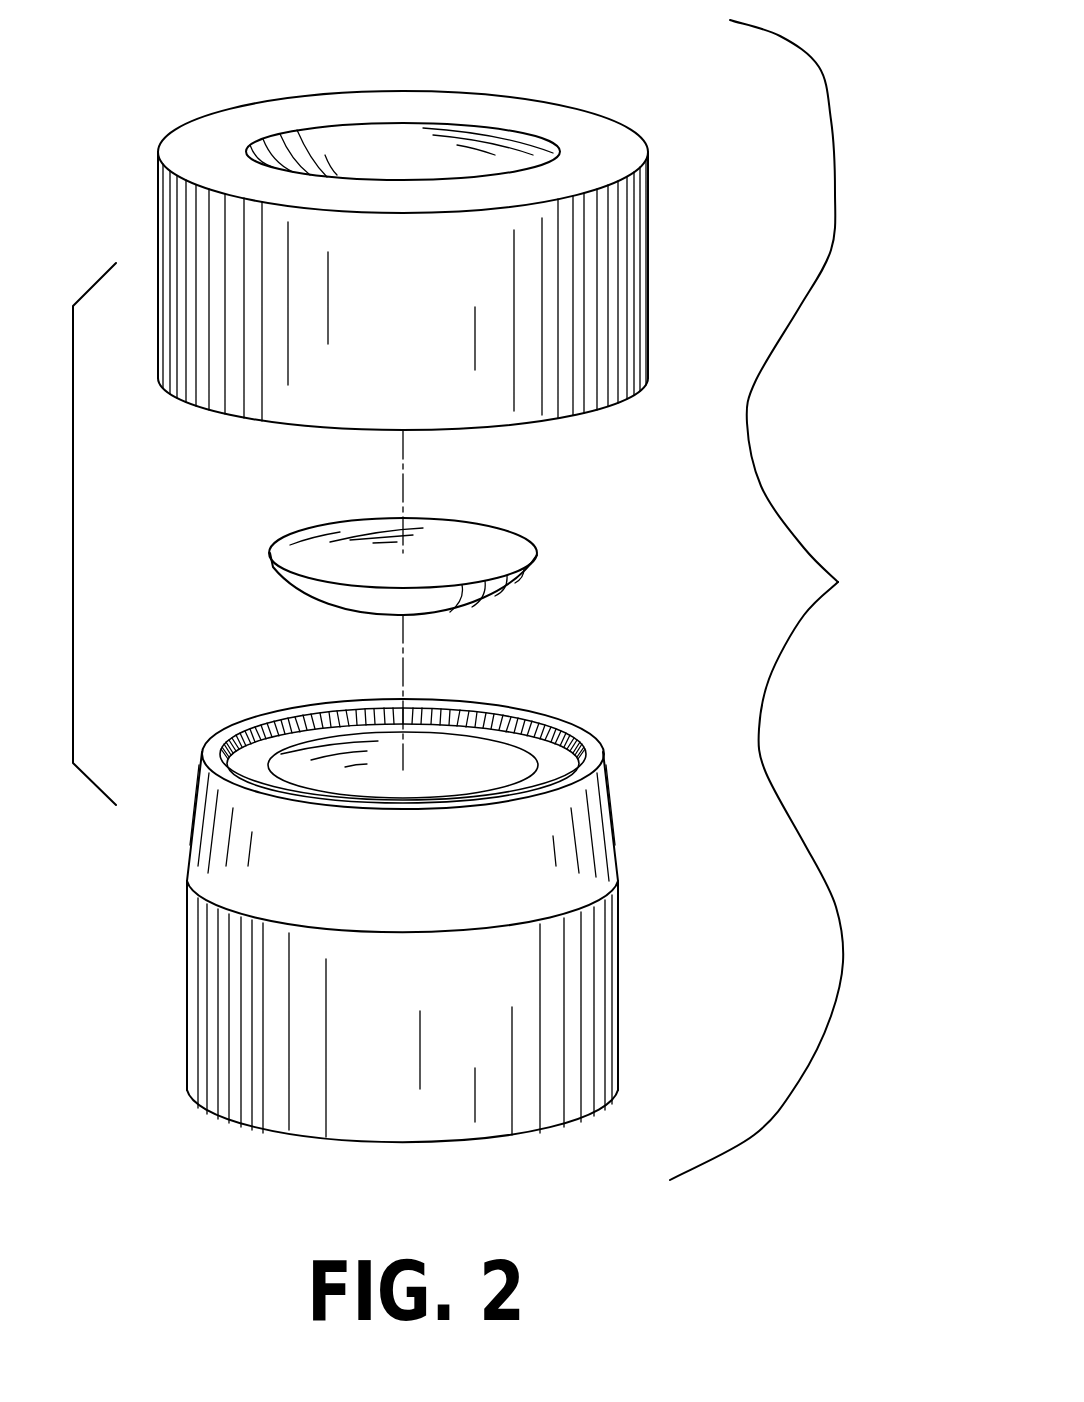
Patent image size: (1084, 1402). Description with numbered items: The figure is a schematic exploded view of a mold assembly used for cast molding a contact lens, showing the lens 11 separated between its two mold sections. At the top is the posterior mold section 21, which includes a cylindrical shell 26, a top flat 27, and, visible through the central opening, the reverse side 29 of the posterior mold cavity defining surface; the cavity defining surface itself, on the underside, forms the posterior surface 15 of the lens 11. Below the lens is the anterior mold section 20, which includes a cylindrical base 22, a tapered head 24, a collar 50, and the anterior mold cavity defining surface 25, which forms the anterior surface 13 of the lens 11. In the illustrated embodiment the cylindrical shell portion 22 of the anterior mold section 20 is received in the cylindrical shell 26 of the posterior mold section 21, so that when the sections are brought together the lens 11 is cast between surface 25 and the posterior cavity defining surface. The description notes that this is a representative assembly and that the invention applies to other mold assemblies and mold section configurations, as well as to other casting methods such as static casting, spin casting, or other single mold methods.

The lens 11 is at (445, 556).
The anterior surface 13 is at (397, 615).
The posterior surface 15 is at (353, 553).
The anterior mold section 20 is at (433, 890).
The posterior mold section 21 is at (446, 243).
The cylindrical base 22 is at (231, 1035).
The tapered head 24 is at (222, 836).
The anterior mold cavity defining surface 25 is at (436, 754).
The cylindrical shell 26 is at (498, 392).
The top flat 27 is at (640, 146).
The reverse side of the posterior mold cavity defining surface 29 is at (425, 142).
The collar 50 is at (586, 751).